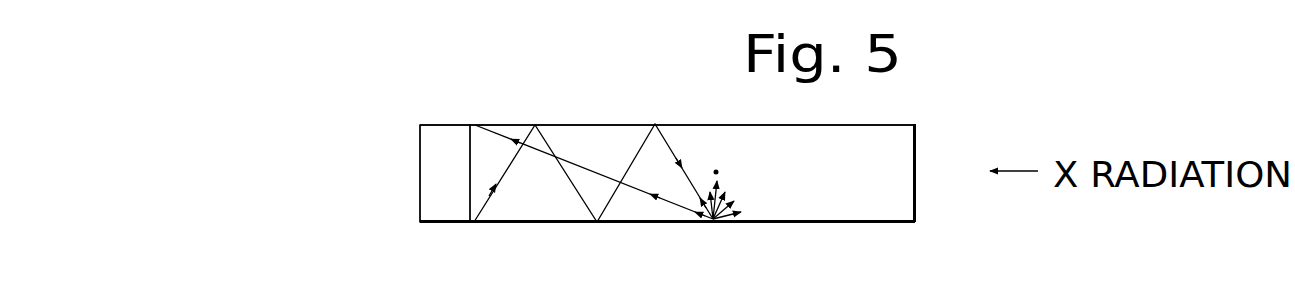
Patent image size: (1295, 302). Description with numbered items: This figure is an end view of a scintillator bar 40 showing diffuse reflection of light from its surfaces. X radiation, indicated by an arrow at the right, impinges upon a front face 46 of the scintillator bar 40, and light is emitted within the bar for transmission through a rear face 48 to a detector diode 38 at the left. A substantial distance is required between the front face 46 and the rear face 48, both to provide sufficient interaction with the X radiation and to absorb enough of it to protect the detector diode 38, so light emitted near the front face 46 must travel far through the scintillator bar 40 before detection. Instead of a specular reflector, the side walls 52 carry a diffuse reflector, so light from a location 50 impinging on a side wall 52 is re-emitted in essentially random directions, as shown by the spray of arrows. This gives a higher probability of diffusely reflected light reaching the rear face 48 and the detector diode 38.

The detector diode 38 is at (440, 140).
The scintillator bar 40 is at (905, 147).
The front face 46 is at (917, 198).
The rear face 48 is at (468, 178).
The location 50 is at (718, 171).
The side walls 52 is at (600, 125).